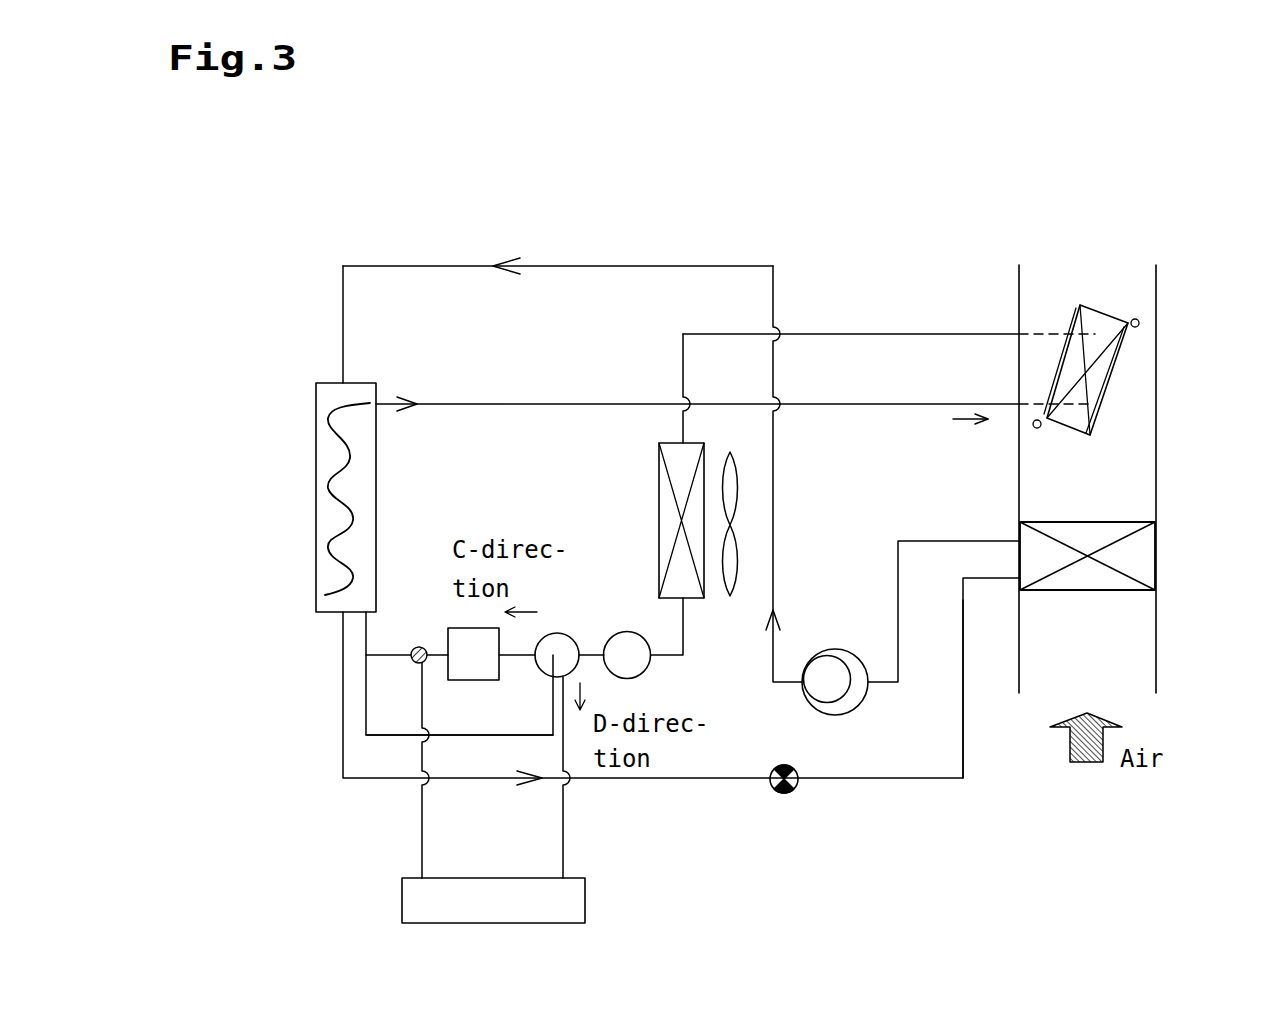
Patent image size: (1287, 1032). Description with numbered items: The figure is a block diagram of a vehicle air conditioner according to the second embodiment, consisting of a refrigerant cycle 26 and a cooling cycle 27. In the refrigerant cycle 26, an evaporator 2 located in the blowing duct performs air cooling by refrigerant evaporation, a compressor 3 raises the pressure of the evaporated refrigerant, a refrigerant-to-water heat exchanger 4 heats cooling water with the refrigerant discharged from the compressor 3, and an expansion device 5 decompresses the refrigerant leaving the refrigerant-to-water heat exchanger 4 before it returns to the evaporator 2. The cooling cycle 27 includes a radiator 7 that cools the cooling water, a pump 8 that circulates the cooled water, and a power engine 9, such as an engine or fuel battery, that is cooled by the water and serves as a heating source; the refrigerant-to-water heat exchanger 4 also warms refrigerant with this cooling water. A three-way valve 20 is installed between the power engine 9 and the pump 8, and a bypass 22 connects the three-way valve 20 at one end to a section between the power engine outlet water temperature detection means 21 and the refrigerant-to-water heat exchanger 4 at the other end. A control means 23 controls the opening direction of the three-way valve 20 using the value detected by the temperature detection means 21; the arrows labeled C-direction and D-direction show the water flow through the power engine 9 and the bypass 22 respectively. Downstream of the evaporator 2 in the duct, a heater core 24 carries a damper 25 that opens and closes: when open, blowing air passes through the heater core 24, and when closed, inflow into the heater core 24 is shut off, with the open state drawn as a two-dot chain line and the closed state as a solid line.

The evaporator 2 is at (1072, 592).
The compressor 3 is at (812, 710).
The refrigerant-to-water heat exchanger 4 is at (315, 467).
The expansion device 5 is at (790, 793).
The radiator 7 is at (657, 527).
The pump 8 is at (651, 669).
The power engine 9 is at (473, 682).
The three-way valve 20 is at (563, 637).
The power engine outlet water temperature detection means 21 is at (418, 646).
The bypass 22 is at (493, 735).
The control means 23 is at (587, 902).
The heater core 24 is at (1103, 313).
The damper 25 is at (1126, 321).
The refrigerant cycle 26 is at (963, 718).
The cooling cycle 27 is at (822, 333).